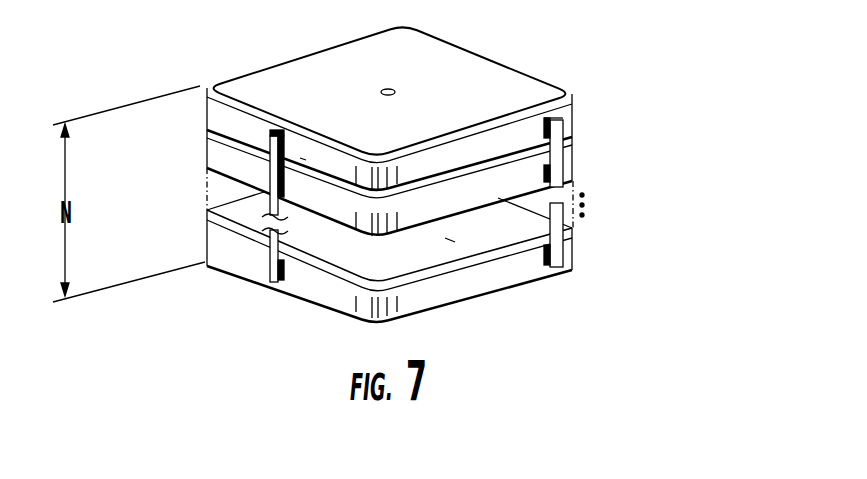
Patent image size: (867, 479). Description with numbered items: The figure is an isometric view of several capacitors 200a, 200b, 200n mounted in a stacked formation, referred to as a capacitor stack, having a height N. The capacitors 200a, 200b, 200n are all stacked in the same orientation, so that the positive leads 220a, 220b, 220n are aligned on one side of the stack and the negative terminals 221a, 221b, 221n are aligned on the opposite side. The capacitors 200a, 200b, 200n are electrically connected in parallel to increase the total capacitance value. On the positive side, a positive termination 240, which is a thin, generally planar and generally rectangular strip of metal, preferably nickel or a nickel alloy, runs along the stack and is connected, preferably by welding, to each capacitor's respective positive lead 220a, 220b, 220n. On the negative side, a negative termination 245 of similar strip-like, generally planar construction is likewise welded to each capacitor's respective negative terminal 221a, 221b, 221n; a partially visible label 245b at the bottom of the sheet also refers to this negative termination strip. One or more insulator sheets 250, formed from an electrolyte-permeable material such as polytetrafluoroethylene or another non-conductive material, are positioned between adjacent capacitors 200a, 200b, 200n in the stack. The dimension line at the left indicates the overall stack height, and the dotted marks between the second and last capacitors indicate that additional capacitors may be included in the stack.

The capacitor 200a is at (524, 97).
The capacitor 200b is at (571, 192).
The capacitor 200n is at (571, 265).
The positive lead 220a is at (564, 126).
The positive lead 220b is at (566, 178).
The positive lead 220n is at (548, 262).
The negative terminal 221a is at (289, 137).
The negative terminal 221b is at (303, 162).
The negative terminal 221n is at (285, 283).
The positive termination 240 is at (563, 173).
The negative termination 245 is at (268, 182).
The insulator sheet 250 is at (450, 240).
The interconnect strip 245b is at (373, 474).